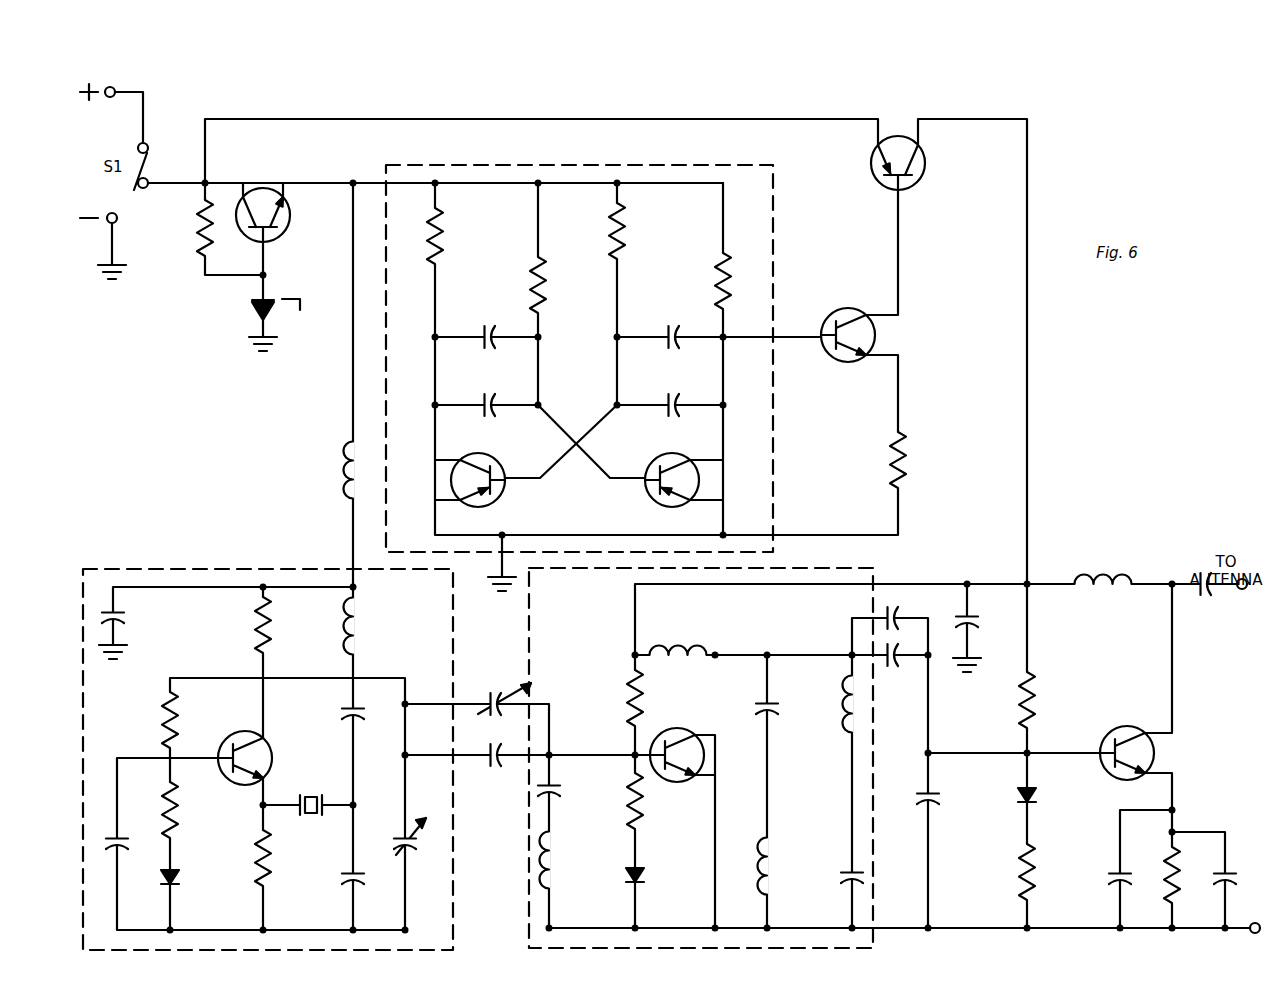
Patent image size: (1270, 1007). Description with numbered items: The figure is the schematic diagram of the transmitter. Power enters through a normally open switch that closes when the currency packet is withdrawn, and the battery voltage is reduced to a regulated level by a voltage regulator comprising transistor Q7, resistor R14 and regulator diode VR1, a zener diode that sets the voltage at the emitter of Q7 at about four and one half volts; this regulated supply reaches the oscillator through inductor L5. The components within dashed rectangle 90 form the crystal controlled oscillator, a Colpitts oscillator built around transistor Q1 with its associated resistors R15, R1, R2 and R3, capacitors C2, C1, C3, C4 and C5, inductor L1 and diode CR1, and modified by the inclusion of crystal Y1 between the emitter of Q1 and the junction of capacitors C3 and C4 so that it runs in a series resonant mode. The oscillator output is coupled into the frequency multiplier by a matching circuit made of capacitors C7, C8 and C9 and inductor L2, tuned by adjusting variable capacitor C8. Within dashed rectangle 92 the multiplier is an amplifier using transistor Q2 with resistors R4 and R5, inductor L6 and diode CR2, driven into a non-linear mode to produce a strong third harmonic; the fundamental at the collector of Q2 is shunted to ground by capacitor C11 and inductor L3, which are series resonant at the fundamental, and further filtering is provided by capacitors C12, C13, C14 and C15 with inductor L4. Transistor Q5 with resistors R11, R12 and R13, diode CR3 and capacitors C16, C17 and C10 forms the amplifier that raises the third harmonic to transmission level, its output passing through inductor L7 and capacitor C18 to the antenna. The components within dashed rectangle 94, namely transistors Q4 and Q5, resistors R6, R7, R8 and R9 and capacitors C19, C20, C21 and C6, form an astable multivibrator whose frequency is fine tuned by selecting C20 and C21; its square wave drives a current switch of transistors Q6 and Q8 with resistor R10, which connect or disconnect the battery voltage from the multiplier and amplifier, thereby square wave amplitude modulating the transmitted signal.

The dashed rectangle 90 is at (266, 568).
The dashed rectangle 92 is at (795, 568).
The dashed rectangle 94 is at (773, 245).
The resistor R14 is at (188, 228).
The transistor Q7 is at (263, 199).
The regulator diode VR1 is at (256, 309).
The resistor R6 is at (422, 236).
The resistor R7 is at (551, 285).
The resistor R8 is at (629, 231).
The resistor R9 is at (736, 281).
The capacitor C19 is at (490, 329).
The capacitor C20 is at (672, 329).
The capacitor C21 is at (490, 397).
The capacitor C6 is at (672, 397).
The transistor Q4 is at (492, 480).
The transistor Q5 is at (887, 616).
The transistor Q8 is at (903, 175).
The transistor Q6 is at (832, 335).
The resistor R10 is at (916, 460).
The inductor L5 is at (330, 470).
The capacitor C2 is at (126, 618).
The resistor R15 is at (245, 625).
The inductor L1 is at (331, 626).
The resistor R1 is at (159, 720).
The transistor Q1 is at (245, 744).
The capacitor C3 is at (339, 710).
The capacitor C1 is at (110, 830).
The resistor R2 is at (159, 810).
The crystal Y1 is at (308, 794).
The resistor R3 is at (250, 858).
The capacitor C4 is at (342, 878).
The capacitor C5 is at (414, 855).
The diode CR1 is at (156, 889).
The variable capacitor C8 is at (490, 696).
The capacitor C7 is at (495, 764).
The capacitor C9 is at (563, 787).
The inductor L2 is at (560, 860).
The inductor L6 is at (678, 633).
The resistor R4 is at (649, 698).
The transistor Q2 is at (677, 766).
The resistor R5 is at (623, 801).
The diode CR2 is at (657, 877).
The capacitor C11 is at (751, 696).
The inductor L3 is at (774, 866).
The inductor L4 is at (830, 704).
The capacitor C12 is at (836, 892).
The capacitor C14 is at (907, 612).
The capacitor C13 is at (882, 665).
The capacitor C15 is at (910, 800).
The capacitor C16 is at (979, 623).
The resistor R11 is at (1008, 700).
The diode CR3 is at (1005, 797).
The resistor R12 is at (1009, 872).
The inductor L7 is at (1103, 564).
The capacitor C18 is at (1205, 591).
The capacitor C17 is at (1102, 874).
The resistor R13 is at (1154, 873).
The capacitor C10 is at (1237, 866).